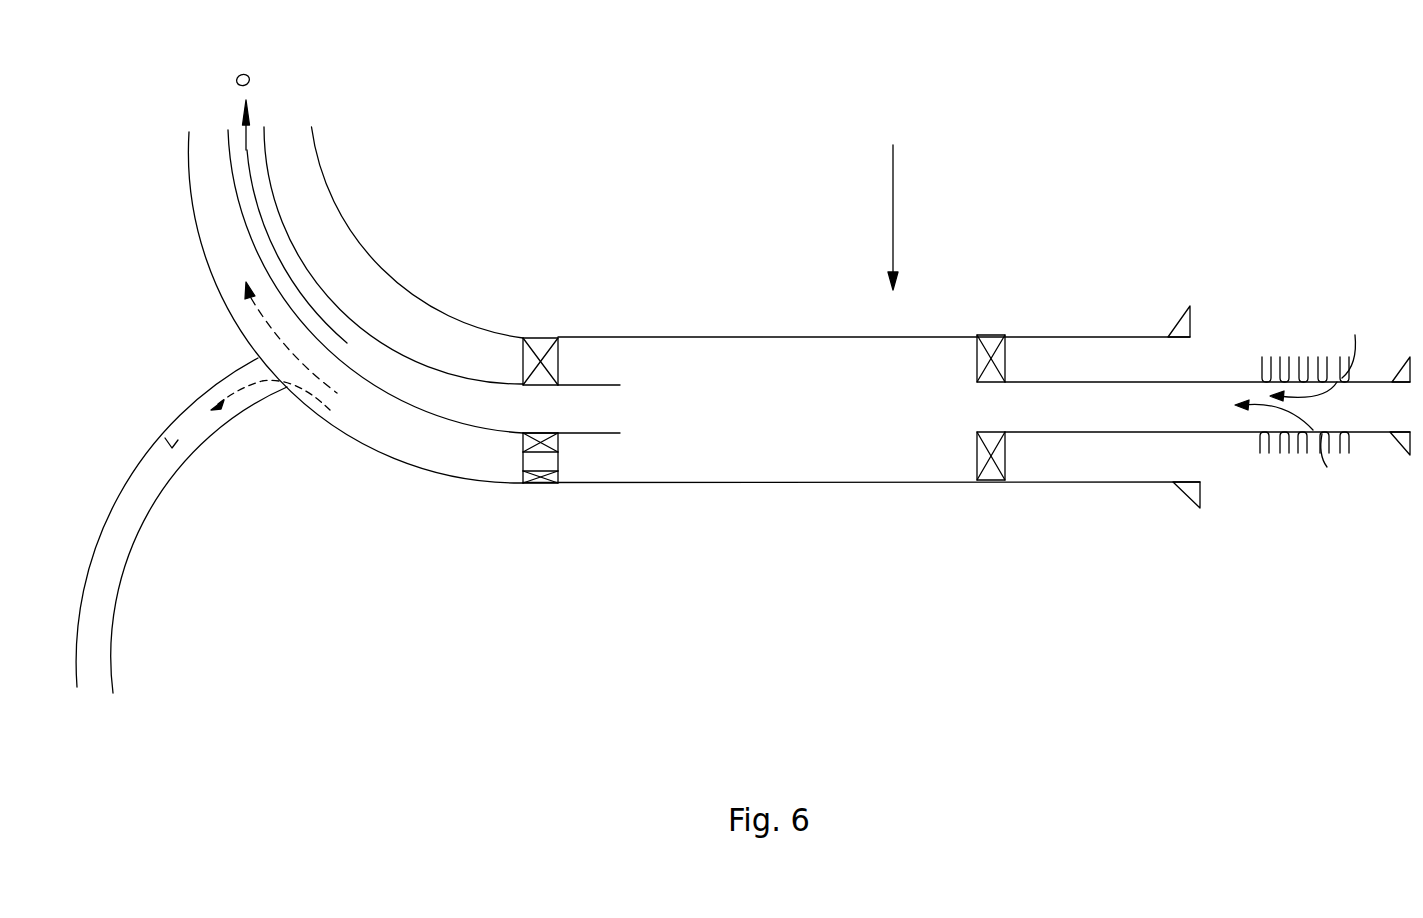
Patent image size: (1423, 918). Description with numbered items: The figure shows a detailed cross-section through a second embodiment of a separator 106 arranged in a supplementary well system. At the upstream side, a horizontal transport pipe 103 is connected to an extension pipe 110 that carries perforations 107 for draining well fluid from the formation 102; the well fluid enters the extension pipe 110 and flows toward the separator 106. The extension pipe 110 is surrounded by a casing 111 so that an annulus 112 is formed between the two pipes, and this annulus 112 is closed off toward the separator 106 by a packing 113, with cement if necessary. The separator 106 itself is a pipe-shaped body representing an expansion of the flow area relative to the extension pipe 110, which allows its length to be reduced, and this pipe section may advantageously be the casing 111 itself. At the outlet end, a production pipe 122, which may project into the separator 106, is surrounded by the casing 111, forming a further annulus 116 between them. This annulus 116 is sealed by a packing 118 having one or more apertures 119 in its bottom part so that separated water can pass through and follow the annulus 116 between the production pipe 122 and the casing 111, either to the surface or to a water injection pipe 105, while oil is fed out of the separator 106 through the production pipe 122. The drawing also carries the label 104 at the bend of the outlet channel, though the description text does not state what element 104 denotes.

The formation 102 is at (1368, 540).
The horizontal transport pipe 103 is at (1045, 306).
The water outlet channel 104 is at (248, 241).
The water injection pipe 105 is at (177, 473).
The separator 106 is at (786, 258).
The perforations 107 is at (1265, 357).
The extension pipe 110 is at (1223, 433).
The casing 111 is at (627, 483).
The annulus 112 is at (1047, 458).
The packing 113 is at (977, 452).
The annulus 116 is at (370, 417).
The packing 118 is at (545, 337).
The apertures 119 is at (520, 452).
The production pipe 122 is at (293, 245).